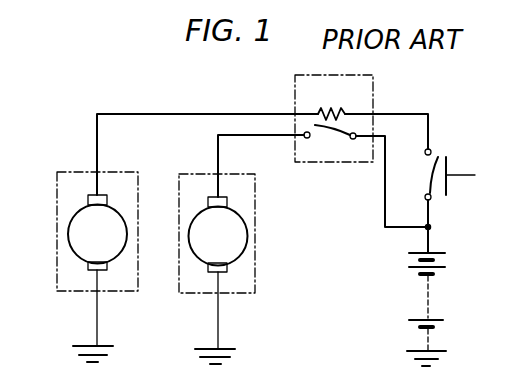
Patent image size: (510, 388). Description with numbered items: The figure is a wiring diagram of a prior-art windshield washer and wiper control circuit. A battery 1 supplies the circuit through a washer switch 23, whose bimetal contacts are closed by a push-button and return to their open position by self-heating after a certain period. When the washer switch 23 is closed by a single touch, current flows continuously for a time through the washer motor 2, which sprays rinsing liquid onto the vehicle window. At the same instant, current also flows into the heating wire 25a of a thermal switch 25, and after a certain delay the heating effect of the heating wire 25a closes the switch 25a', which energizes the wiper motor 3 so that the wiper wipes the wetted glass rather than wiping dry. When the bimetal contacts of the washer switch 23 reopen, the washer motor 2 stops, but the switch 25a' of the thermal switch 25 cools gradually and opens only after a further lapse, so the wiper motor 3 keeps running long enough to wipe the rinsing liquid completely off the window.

The battery 1 is at (426, 305).
The washer motor 2 is at (72, 243).
The wiper motor 3 is at (191, 243).
The washer switch 23 is at (436, 153).
The thermal switch 25 is at (294, 77).
The heating wire 25a is at (369, 100).
The switch 25a' is at (330, 157).